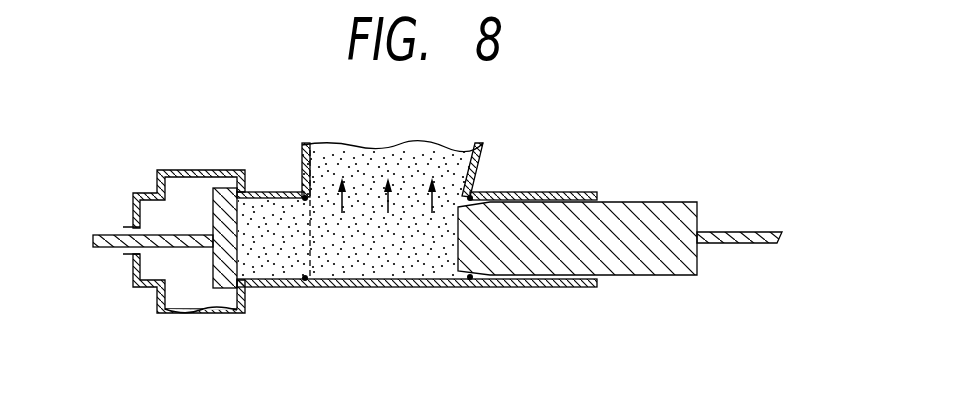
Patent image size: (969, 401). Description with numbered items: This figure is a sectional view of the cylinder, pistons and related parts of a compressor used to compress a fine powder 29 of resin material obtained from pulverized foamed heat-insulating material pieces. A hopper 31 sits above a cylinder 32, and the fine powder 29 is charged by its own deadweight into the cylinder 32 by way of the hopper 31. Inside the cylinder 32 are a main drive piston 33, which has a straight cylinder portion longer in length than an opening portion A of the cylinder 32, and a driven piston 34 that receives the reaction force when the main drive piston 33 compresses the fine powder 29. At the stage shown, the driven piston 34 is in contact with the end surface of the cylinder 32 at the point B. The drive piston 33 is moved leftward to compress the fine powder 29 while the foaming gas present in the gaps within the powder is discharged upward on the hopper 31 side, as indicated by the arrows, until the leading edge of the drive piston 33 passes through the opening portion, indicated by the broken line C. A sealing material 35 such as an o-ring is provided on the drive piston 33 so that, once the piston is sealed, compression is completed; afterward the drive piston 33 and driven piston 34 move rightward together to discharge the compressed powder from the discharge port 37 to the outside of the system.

The fine powder 29 is at (397, 247).
The hopper 31 is at (475, 167).
The cylinder 32 is at (528, 287).
The main drive piston 33 is at (638, 200).
The driven piston 34 is at (220, 170).
The sealing material 35 is at (470, 197).
The discharge port 37 is at (210, 313).
The opening portion A is at (418, 193).
The contact point B is at (261, 188).
The broken line C is at (318, 142).